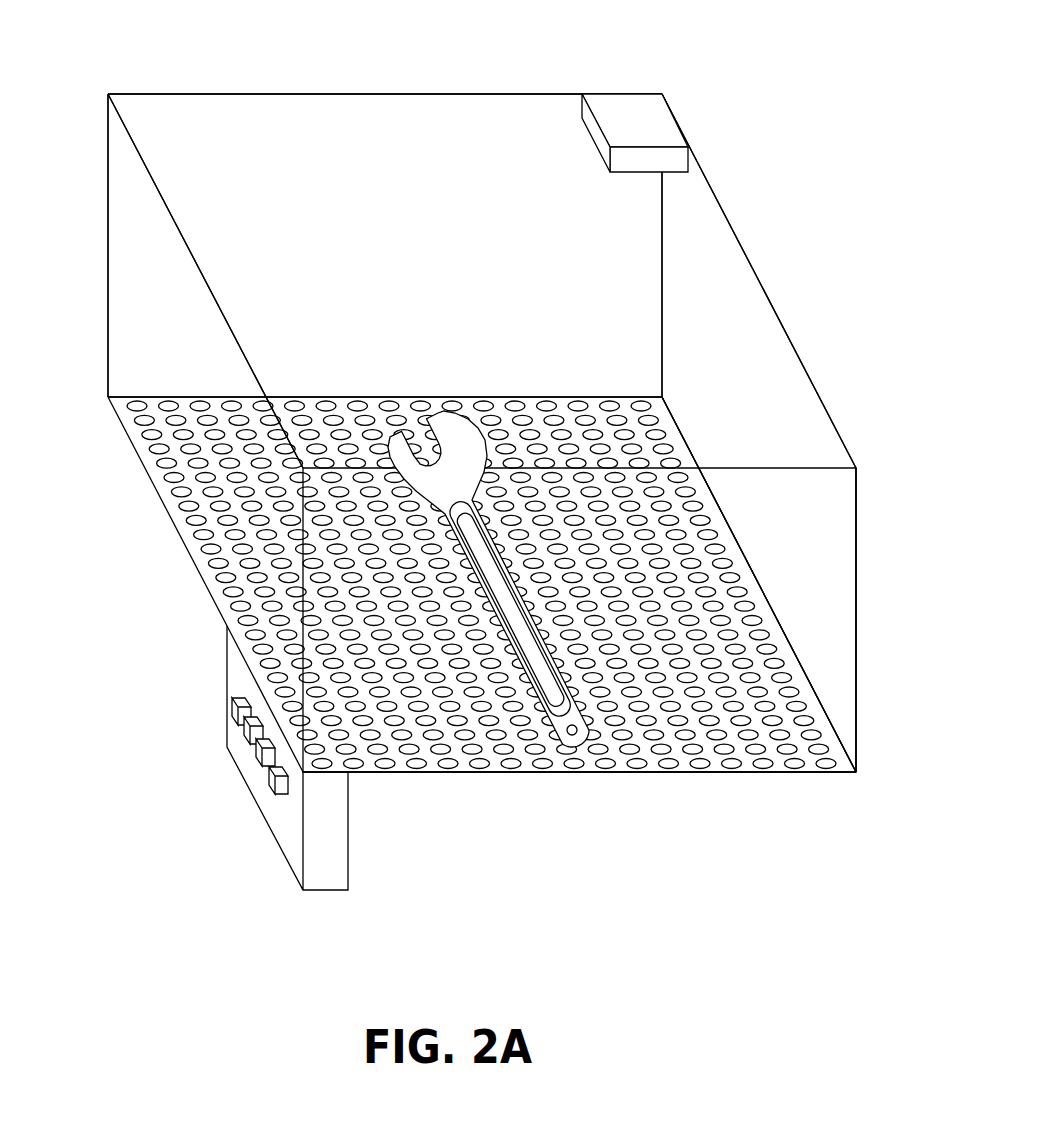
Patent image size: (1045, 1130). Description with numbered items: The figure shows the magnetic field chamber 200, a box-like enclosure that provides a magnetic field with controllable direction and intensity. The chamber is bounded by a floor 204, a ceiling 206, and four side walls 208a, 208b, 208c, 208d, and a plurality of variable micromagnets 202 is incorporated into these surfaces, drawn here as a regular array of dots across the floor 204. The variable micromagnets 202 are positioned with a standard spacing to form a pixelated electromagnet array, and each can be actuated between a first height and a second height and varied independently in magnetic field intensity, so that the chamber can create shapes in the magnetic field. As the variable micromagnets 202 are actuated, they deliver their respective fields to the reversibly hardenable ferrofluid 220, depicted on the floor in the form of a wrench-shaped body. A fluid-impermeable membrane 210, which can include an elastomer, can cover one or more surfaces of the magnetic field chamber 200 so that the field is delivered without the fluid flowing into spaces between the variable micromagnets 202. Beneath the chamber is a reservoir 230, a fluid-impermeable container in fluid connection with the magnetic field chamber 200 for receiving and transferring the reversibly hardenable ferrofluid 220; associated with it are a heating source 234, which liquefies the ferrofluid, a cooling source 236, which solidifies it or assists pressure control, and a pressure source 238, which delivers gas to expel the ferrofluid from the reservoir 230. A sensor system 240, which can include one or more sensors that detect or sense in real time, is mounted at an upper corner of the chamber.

The magnetic field chamber 200 is at (858, 428).
The variable micromagnets 202 is at (413, 767).
The floor 204 is at (780, 765).
The ceiling 206 is at (747, 327).
The side wall 208a is at (735, 233).
The side wall 208b is at (137, 284).
The side wall 208c is at (405, 118).
The side wall 208d is at (812, 585).
The membrane 210 is at (812, 712).
The reversibly hardenable ferrofluid 220 is at (562, 707).
The reservoir 230 is at (322, 863).
The heating source 234 is at (245, 733).
The cooling source 236 is at (257, 755).
The pressure source 238 is at (232, 712).
The sensor system 240 is at (628, 108).